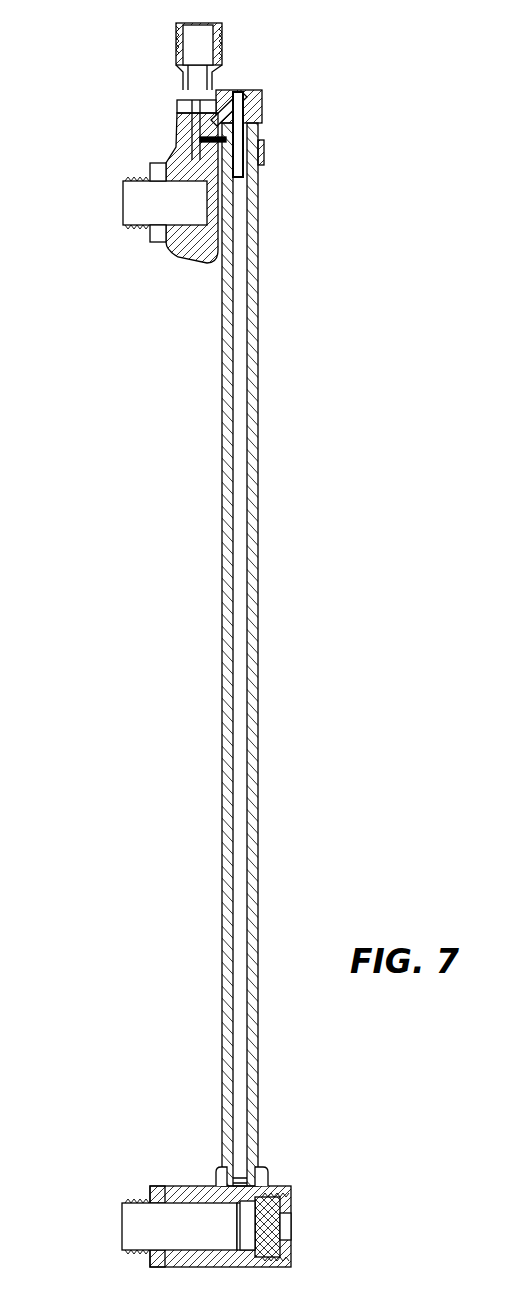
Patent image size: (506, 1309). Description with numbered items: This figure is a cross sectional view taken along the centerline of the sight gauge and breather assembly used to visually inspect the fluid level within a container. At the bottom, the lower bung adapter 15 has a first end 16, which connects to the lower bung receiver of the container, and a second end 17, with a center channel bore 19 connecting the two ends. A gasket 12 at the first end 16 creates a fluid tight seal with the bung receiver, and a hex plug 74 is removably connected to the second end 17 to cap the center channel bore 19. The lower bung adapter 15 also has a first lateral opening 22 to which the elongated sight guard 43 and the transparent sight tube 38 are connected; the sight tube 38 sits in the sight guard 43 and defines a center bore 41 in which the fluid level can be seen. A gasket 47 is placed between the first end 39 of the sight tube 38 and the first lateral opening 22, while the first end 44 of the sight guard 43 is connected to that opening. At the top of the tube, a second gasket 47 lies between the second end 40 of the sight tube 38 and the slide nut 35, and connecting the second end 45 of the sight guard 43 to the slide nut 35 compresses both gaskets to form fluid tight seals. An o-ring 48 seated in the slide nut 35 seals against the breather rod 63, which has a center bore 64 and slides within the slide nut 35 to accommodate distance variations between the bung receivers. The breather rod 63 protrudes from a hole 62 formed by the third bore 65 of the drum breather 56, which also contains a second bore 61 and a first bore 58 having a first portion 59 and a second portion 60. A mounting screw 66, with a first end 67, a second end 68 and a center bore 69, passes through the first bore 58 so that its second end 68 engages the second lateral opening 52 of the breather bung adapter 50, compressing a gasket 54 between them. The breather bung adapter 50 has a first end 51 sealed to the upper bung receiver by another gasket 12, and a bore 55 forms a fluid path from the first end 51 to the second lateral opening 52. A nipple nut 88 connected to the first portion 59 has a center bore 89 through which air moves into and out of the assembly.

The gasket 12 is at (148, 1192).
The lower bung adapter 15 is at (147, 1285).
The first end 16 is at (125, 1258).
The second end 17 is at (305, 1297).
The center channel bore 19 is at (138, 1238).
The first lateral opening 22 is at (218, 1178).
The slide nut 35 is at (330, 193).
The sight tube 38 is at (292, 485).
The first end 39 is at (252, 1112).
The second end 40 is at (295, 366).
The center bore 41 is at (295, 592).
The sight guard 43 is at (222, 735).
The first end 44 is at (222, 1145).
The second end 45 is at (178, 383).
The gasket 47 is at (300, 212).
The o-ring 48 is at (322, 165).
The breather bung adapter 50 is at (190, 308).
The first end 51 is at (103, 297).
The second lateral opening 52 is at (157, 210).
The gasket 54 is at (292, 50).
The bore 55 is at (72, 262).
The drum breather 56 is at (335, 92).
The first bore 58 is at (180, 118).
The first portion 59 is at (218, 100).
The second portion 60 is at (178, 128).
The second bore 61 is at (273, 30).
The hole 62 is at (305, 122).
The breather rod 63 is at (345, 140).
The center bore 64 is at (282, 243).
The third bore 65 is at (310, 78).
The mounting screw 66 is at (190, 97).
The first end 67 is at (195, 100).
The second end 68 is at (182, 146).
The center bore 69 is at (200, 139).
The hex plug 74 is at (272, 1222).
The nipple nut 88 is at (178, 42).
The center bore 89 is at (199, 47).